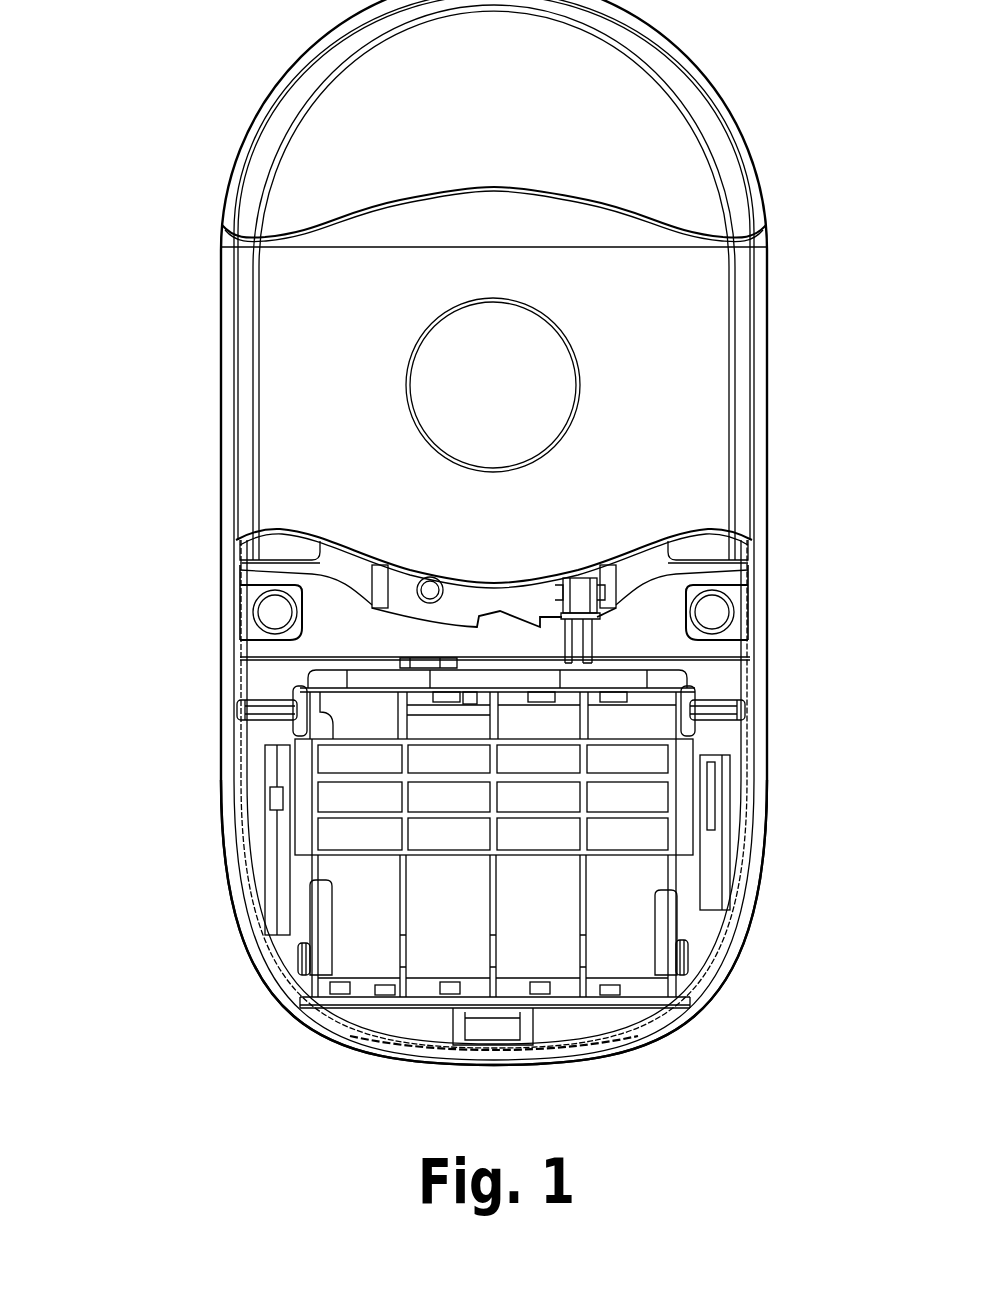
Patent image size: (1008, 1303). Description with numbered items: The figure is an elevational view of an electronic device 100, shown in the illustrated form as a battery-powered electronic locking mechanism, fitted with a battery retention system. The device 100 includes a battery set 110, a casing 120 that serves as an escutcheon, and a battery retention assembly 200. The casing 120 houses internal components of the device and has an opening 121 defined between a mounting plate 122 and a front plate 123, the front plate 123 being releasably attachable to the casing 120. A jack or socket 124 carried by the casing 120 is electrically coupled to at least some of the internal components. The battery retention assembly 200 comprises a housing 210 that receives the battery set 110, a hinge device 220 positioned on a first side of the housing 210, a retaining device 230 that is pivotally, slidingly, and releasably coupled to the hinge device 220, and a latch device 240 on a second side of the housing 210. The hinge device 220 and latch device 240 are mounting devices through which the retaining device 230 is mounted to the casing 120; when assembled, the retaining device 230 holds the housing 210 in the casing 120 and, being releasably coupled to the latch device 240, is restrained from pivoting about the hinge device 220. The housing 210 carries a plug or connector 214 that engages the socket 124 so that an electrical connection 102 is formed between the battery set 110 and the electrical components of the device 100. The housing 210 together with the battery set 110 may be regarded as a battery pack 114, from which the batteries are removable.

The electronic device 100 is at (148, 196).
The electrical connection 102 is at (549, 563).
The battery set 110 is at (389, 1033).
The battery pack 114 is at (288, 1092).
The casing 120 is at (182, 572).
The opening 121 is at (620, 1033).
The mounting plate 122 is at (228, 718).
The front plate 123 is at (420, 580).
The socket 124 is at (590, 578).
The battery retention assembly 200 is at (736, 688).
The housing 210 is at (327, 1003).
The connector 214 is at (590, 630).
The hinge device 220 is at (240, 804).
The retaining device 230 is at (328, 884).
The latch device 240 is at (760, 797).